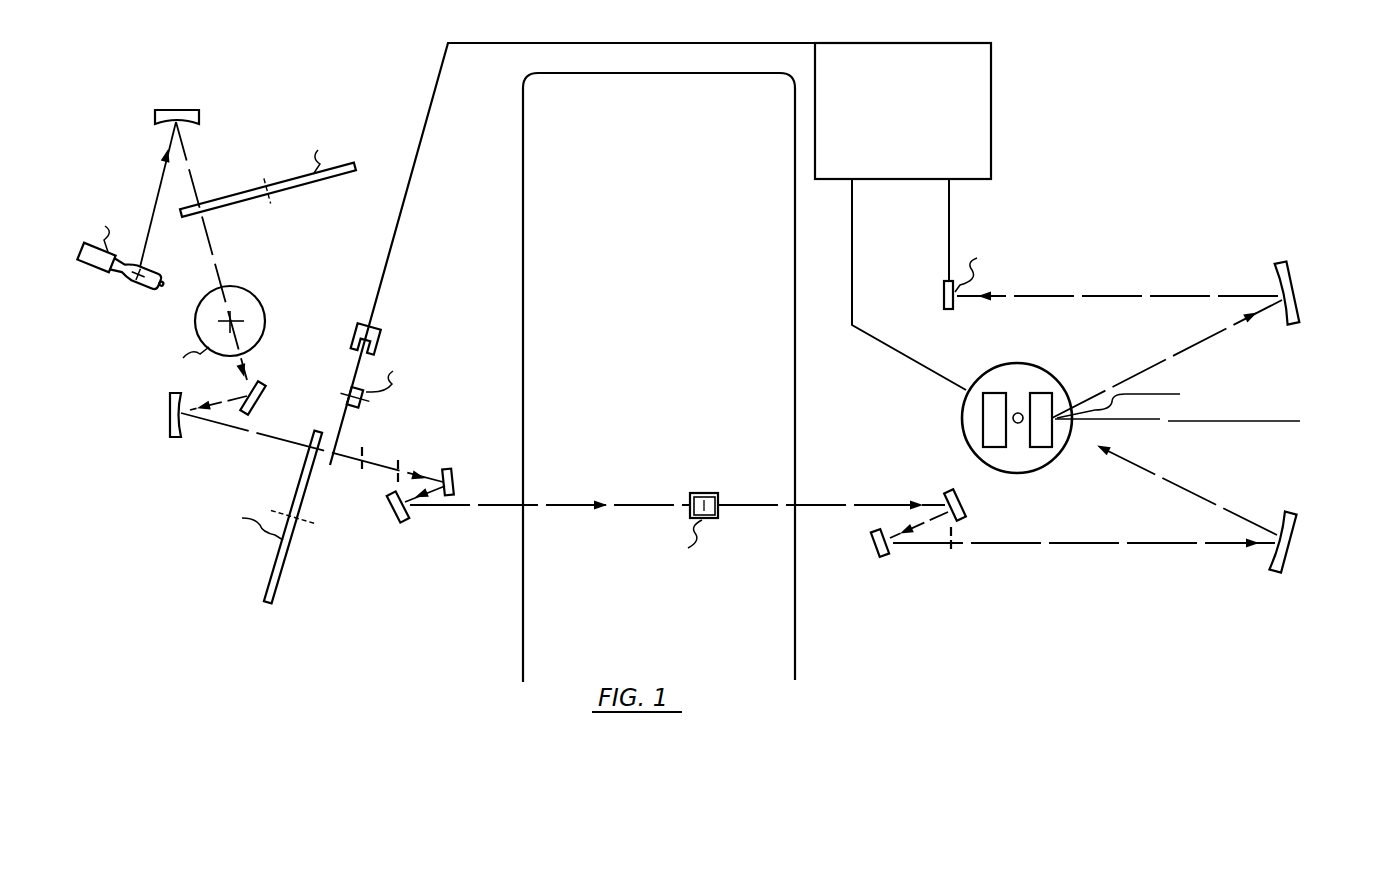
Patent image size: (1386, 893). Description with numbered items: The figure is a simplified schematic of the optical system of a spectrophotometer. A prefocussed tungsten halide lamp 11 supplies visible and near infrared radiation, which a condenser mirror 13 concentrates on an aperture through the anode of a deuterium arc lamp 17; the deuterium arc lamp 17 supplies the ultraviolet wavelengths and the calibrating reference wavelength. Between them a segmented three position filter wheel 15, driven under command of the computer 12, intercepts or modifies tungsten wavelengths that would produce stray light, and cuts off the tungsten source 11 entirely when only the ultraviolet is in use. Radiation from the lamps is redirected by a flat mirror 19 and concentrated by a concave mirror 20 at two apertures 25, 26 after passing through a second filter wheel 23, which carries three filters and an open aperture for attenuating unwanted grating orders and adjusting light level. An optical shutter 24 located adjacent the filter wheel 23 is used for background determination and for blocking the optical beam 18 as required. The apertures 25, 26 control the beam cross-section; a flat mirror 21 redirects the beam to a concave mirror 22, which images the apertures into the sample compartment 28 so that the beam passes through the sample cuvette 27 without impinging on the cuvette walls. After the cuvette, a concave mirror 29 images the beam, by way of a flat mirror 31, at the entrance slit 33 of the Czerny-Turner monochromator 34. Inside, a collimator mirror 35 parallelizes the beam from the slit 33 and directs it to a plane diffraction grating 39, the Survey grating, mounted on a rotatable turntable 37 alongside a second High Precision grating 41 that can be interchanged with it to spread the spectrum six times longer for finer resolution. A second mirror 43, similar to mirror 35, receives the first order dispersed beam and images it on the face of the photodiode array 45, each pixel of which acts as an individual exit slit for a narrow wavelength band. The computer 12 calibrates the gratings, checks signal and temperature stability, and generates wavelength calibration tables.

The tungsten halide lamp 11 is at (140, 284).
The computer 12 is at (992, 127).
The condenser mirror 13 is at (188, 108).
The segmented three position filter wheel 15 is at (244, 192).
The deuterium arc lamp 17 is at (267, 318).
The optical beam 18 is at (268, 447).
The flat mirror 19 is at (265, 397).
The concave mirror 20 is at (171, 420).
The flat mirror 21 is at (460, 483).
The concave mirror 22 is at (400, 520).
The second filter wheel 23 is at (276, 558).
The optical shutter 24 is at (354, 430).
The aperture 25 is at (362, 474).
The aperture 26 is at (405, 465).
The sample cuvette 27 is at (702, 492).
The sample compartment 28 is at (666, 164).
The concave mirror 29 is at (950, 490).
The flat mirror 31 is at (882, 558).
The entrance slit 33 is at (958, 552).
The monochromator 34 is at (1108, 422).
The collimator mirror 35 is at (1290, 572).
The rotatable turntable 37 is at (992, 372).
The Survey grating 39 is at (1052, 395).
The High Precision grating 41 is at (983, 418).
The second mirror 43 is at (1296, 305).
The photodiode array 45 is at (942, 290).